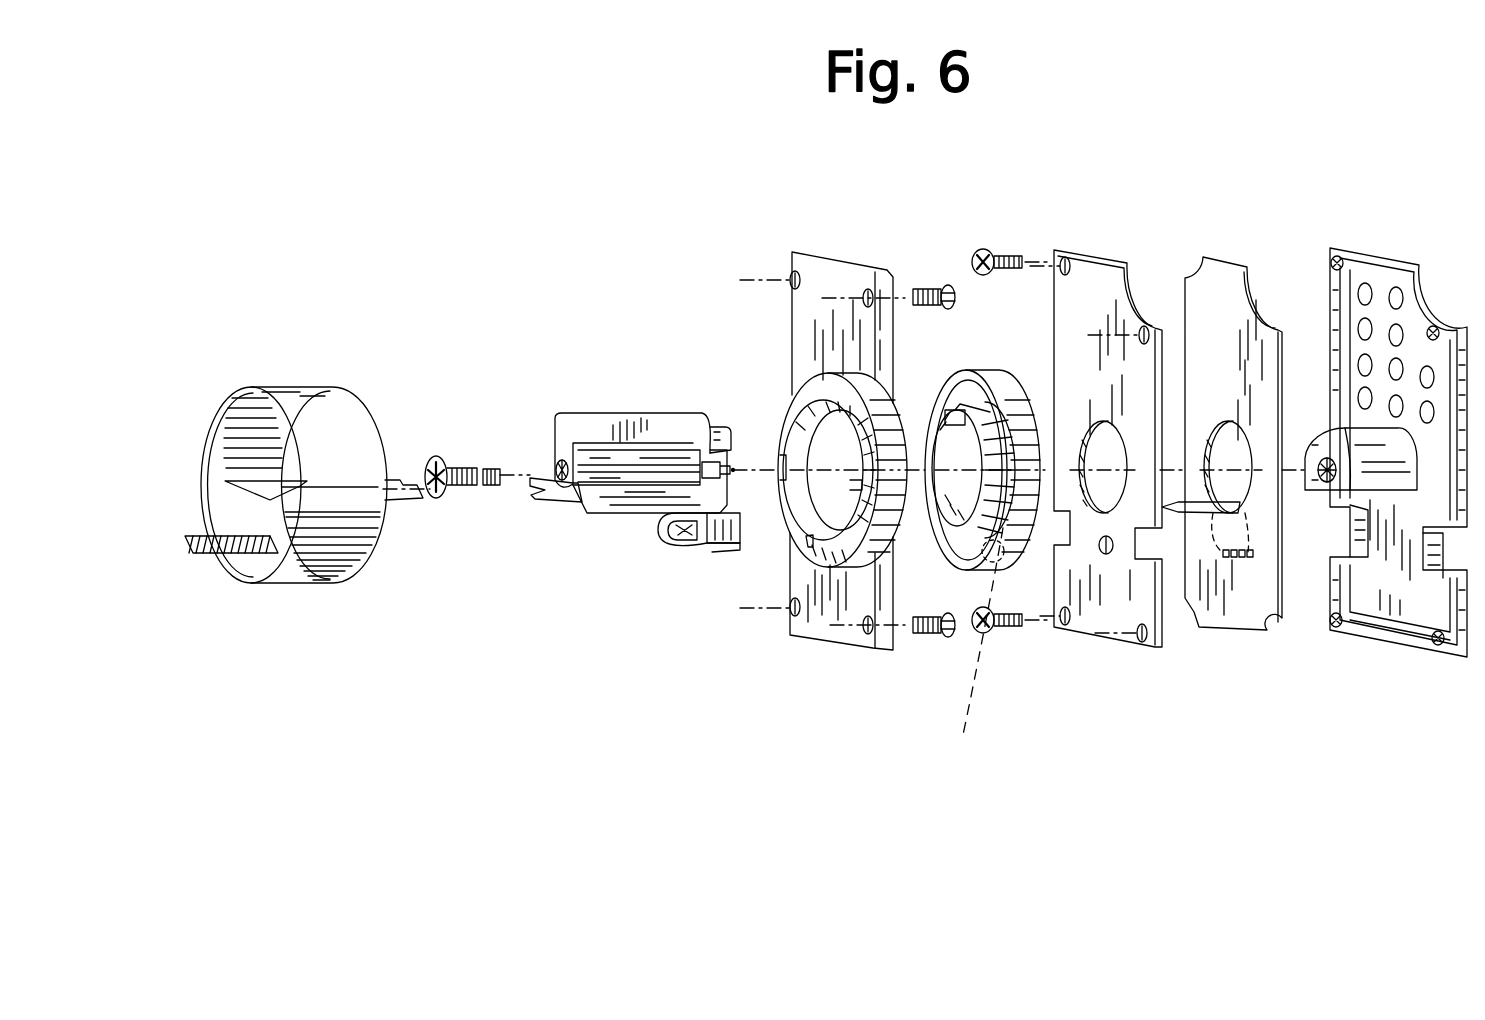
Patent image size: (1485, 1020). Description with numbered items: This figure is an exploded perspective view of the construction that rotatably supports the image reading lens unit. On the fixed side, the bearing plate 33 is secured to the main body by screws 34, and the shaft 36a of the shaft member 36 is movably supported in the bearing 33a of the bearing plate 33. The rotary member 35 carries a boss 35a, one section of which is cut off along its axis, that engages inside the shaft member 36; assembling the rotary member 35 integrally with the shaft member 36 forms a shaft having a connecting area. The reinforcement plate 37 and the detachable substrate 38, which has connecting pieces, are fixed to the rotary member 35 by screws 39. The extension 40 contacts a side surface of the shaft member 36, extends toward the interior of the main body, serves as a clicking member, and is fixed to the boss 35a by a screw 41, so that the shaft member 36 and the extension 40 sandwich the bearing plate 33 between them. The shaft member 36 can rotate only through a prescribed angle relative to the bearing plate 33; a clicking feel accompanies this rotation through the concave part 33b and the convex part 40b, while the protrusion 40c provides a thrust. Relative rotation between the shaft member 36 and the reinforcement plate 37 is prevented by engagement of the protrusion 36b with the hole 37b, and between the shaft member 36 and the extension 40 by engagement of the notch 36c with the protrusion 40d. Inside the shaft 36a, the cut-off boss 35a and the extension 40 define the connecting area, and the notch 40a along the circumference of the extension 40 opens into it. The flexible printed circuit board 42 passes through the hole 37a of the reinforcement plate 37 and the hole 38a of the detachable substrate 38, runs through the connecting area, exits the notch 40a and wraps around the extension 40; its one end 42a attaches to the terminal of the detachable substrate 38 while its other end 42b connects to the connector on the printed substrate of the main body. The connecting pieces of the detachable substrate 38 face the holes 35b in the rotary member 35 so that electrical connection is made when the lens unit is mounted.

The bearing plate 33 is at (848, 250).
The bearing 33a is at (798, 502).
The concave part 33b is at (810, 548).
The screws 34 is at (933, 636).
The rotary member 35 is at (1374, 252).
The boss 35a is at (1312, 488).
The holes 35b is at (1400, 300).
The shaft member 36 is at (958, 397).
The shaft 36a is at (990, 557).
The protrusion 36b is at (972, 646).
The notch 36c is at (985, 411).
The reinforcement plate 37 is at (1094, 255).
The hole 37a is at (1090, 447).
The hole 37b is at (1106, 555).
The detachable substrate 38 is at (1226, 265).
The hole 38a is at (1228, 433).
The screws 39 is at (1003, 634).
The extension 40 is at (633, 413).
The notch 40a is at (530, 488).
The convex part 40b is at (688, 542).
The protrusion 40c is at (733, 465).
The protrusion 40d is at (732, 425).
The screw 41 is at (470, 468).
The flexible printed circuit board 42 is at (318, 387).
The one end 42a is at (412, 502).
The other end 42b is at (200, 538).